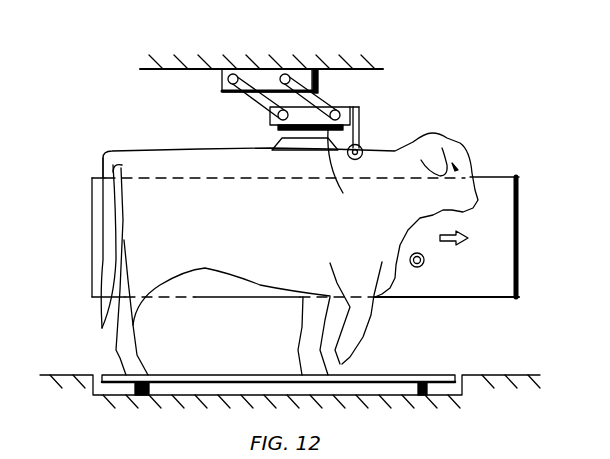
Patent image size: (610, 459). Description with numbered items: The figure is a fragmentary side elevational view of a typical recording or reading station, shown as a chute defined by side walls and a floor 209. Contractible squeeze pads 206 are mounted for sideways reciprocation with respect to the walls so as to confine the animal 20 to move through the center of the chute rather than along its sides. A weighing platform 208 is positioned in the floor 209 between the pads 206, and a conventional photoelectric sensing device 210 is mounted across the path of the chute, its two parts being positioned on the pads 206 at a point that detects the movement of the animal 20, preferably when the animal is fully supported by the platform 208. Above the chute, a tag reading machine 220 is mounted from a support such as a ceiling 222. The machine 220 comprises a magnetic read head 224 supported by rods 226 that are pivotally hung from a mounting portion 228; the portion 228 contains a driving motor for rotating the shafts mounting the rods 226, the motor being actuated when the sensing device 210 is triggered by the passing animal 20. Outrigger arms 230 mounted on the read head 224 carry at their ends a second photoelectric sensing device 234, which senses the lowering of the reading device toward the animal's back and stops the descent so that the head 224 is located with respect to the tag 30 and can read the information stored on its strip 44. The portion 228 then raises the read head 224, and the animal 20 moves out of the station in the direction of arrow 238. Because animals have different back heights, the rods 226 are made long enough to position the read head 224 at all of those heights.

The animal 20 is at (292, 233).
The tag 30 is at (268, 157).
The strip 44 is at (280, 142).
The squeeze pads 206 is at (490, 283).
The weighing platform 208 is at (368, 375).
The floor 209 is at (482, 375).
The photoelectric sensing device 210 is at (417, 268).
The tag reading machine 220 is at (366, 102).
The ceiling 222 is at (166, 66).
The magnetic read head 224 is at (349, 174).
The rods 226 is at (253, 96).
The mounting portion 228 is at (222, 75).
The outrigger arms 230 is at (362, 115).
The second photoelectric sensing device 234 is at (362, 147).
The arrow 238 is at (455, 230).